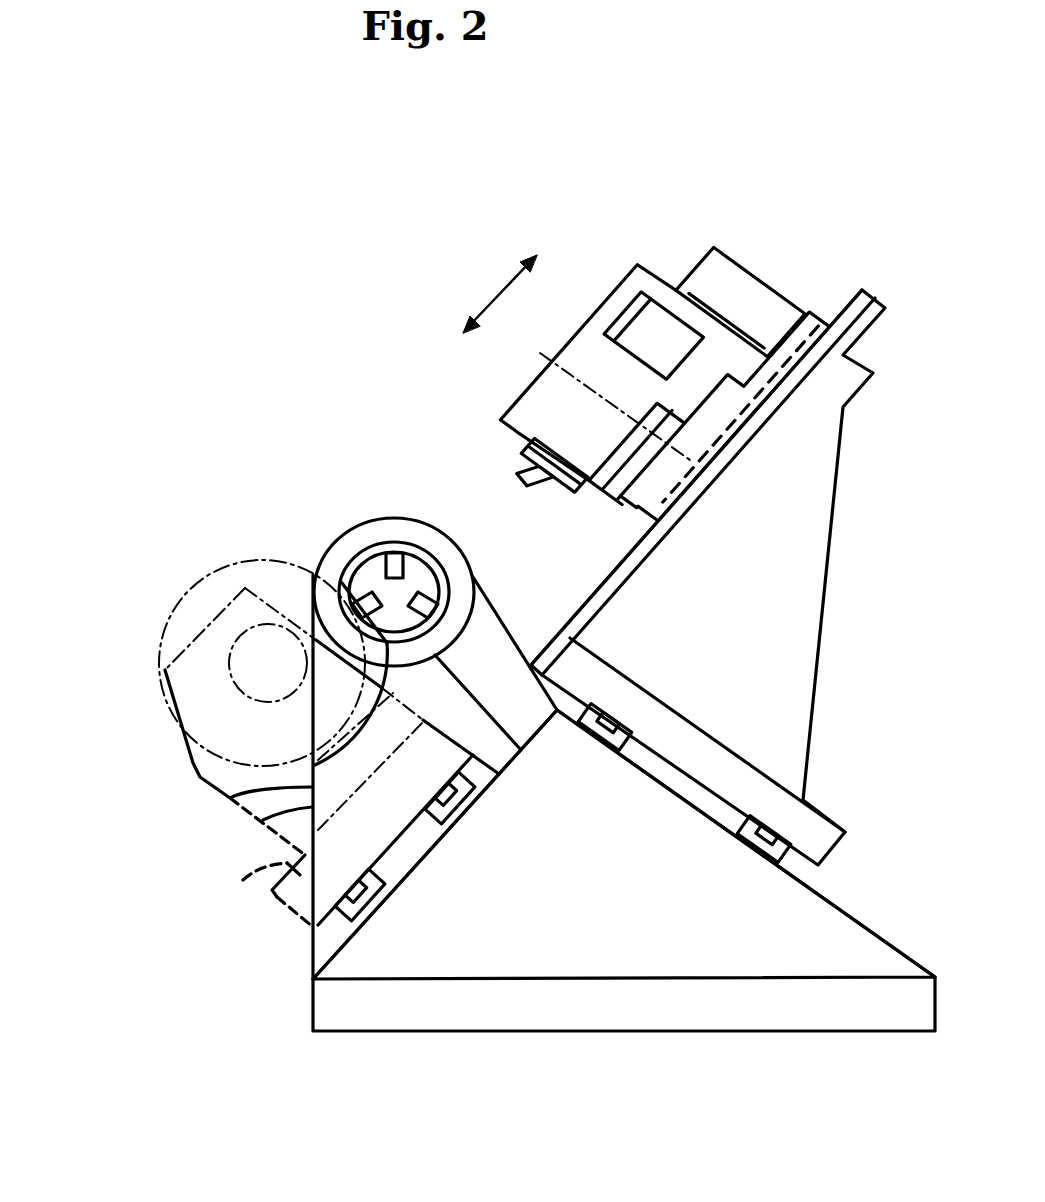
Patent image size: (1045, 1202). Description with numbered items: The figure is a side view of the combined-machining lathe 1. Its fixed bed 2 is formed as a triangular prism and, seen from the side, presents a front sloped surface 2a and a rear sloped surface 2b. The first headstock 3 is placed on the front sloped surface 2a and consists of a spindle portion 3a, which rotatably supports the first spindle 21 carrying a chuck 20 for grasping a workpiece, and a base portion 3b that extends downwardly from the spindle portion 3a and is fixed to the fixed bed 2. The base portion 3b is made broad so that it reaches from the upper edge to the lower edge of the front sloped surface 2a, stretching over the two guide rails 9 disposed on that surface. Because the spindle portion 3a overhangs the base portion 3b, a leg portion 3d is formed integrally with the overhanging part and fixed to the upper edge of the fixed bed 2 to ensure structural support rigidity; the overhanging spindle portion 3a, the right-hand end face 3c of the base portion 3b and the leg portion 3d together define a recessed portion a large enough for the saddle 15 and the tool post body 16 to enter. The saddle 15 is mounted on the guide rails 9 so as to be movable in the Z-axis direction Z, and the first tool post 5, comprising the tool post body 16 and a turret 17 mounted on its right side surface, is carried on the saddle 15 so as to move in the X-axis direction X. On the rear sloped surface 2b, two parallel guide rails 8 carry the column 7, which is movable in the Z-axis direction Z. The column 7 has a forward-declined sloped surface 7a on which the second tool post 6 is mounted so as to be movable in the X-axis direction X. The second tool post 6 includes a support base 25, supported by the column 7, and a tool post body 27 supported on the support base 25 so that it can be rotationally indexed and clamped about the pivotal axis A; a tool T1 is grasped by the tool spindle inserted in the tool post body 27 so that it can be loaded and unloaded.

The combined-machining lathe 1 is at (313, 282).
The fixed bed 2 is at (852, 906).
The front sloped surface 2a is at (498, 745).
The rear sloped surface 2b is at (827, 878).
The first headstock 3 is at (428, 518).
The spindle portion 3a is at (393, 512).
The base portion 3b is at (230, 798).
The right-hand end face 3c is at (263, 820).
The leg portion 3d is at (500, 735).
The first tool post 5 is at (140, 655).
The second tool post 6 is at (736, 247).
The column 7 is at (812, 672).
The forward-declined sloped surface 7a is at (854, 313).
The guide rails 8 is at (740, 818).
The guide rails 9 is at (435, 815).
The saddle 15 is at (243, 880).
The tool post body 16 is at (192, 775).
The turret 17 is at (190, 762).
The chuck 20 is at (445, 582).
The first spindle 21 is at (450, 553).
The support base 25 is at (645, 545).
The tool post body 27 is at (565, 388).
The pivotal axis A is at (602, 393).
The tool T1 is at (538, 490).
The X-axis direction X is at (527, 268).
The Z-axis direction Z is at (485, 272).
The recessed portion a is at (483, 743).